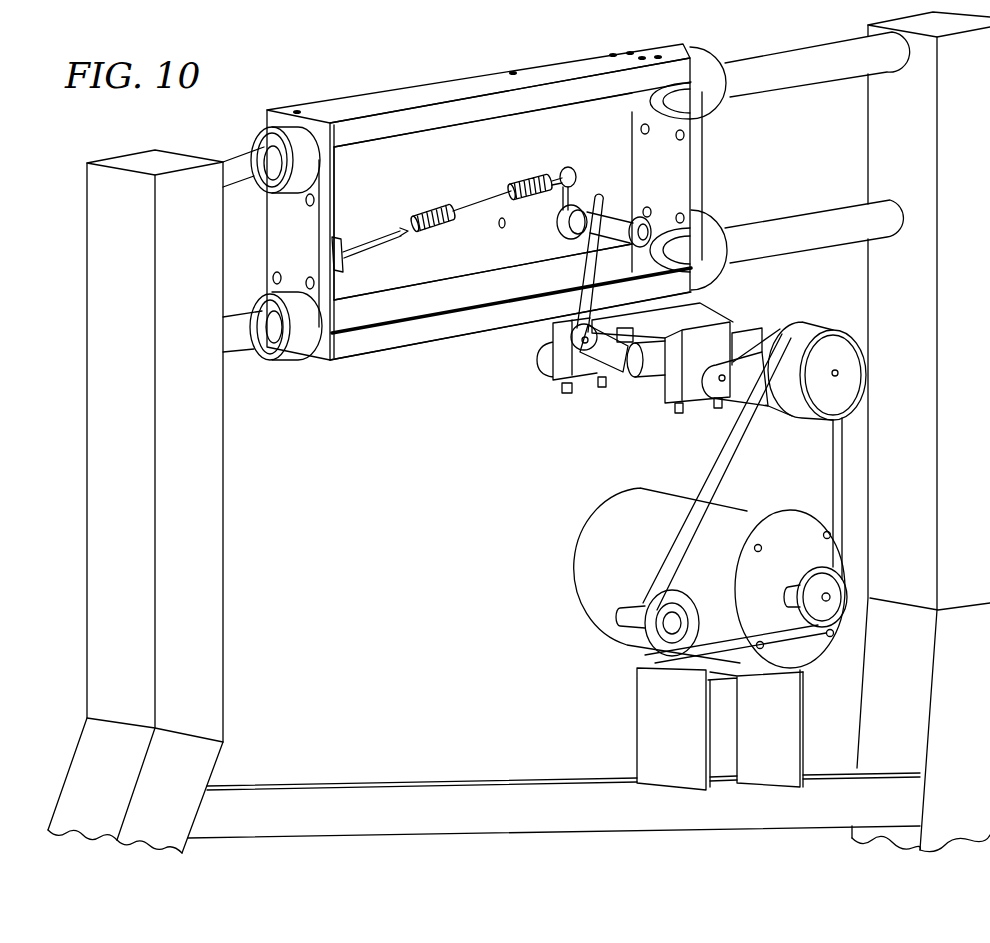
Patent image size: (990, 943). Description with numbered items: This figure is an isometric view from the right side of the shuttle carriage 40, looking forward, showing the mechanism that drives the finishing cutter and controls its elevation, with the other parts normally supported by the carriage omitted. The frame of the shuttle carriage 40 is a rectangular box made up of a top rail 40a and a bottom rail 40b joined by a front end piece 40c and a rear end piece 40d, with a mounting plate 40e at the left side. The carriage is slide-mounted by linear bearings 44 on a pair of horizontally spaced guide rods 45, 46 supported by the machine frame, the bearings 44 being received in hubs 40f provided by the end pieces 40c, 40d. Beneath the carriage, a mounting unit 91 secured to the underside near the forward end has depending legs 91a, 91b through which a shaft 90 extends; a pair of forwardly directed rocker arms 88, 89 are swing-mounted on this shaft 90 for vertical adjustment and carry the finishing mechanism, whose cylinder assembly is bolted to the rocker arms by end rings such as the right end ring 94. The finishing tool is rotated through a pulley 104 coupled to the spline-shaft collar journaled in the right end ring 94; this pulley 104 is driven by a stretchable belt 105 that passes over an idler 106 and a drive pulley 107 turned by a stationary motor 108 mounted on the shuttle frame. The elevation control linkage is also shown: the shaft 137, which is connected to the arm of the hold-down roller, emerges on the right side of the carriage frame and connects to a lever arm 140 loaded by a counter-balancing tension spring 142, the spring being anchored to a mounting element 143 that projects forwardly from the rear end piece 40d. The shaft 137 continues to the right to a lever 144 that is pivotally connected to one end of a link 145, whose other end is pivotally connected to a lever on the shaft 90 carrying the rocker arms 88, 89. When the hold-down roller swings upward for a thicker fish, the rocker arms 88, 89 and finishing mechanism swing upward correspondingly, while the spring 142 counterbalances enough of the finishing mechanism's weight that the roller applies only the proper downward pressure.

The shuttle carriage 40 is at (482, 220).
The top rail 40a is at (432, 84).
The bottom rail 40b is at (366, 345).
The front end piece 40c is at (697, 166).
The rear end piece 40d is at (278, 237).
The mounting plate 40e is at (398, 191).
The hub 40f is at (298, 350).
The linear bearing 44 is at (262, 140).
The guide rod 45 is at (789, 78).
The guide rod 46 is at (814, 198).
The rocker arm 88 is at (747, 357).
The rocker arm 89 is at (618, 382).
The shaft 90 is at (658, 372).
The mounting unit 91 is at (629, 366).
The leg 91a is at (692, 397).
The leg 91b is at (560, 375).
The right end ring 94 is at (762, 342).
The pulley 104 is at (850, 312).
The stretchable belt 105 is at (714, 463).
The idler 106 is at (654, 641).
The drive pulley 107 is at (806, 578).
The motor 108 is at (772, 502).
The shaft 137 is at (594, 210).
The lever arm 140 is at (573, 184).
The tension spring 142 is at (445, 196).
The mounting element 143 is at (375, 225).
The lever 144 is at (618, 222).
The link 145 is at (594, 276).